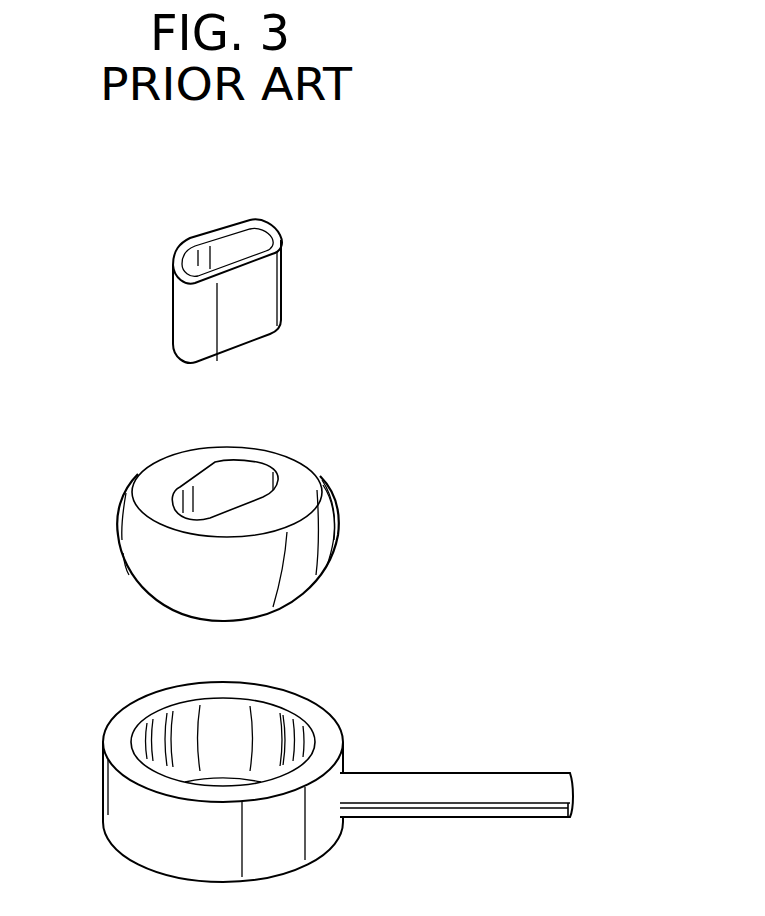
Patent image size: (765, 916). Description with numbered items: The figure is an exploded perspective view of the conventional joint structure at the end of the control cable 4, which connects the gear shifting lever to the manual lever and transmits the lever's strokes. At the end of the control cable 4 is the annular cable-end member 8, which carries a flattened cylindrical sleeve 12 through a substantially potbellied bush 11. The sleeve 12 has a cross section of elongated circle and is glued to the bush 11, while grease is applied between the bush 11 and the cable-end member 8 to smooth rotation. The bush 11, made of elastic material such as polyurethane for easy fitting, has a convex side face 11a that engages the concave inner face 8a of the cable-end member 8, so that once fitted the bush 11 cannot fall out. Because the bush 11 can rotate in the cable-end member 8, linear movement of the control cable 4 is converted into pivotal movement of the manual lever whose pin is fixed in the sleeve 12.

The flattened cylindrical sleeve 12 is at (298, 271).
The potbellied bush 11 is at (336, 476).
The side face of the bush 11a is at (327, 568).
The cable-end member 8 is at (270, 757).
The inner face of the cable-end member 8a is at (242, 723).
The control cable 4 is at (482, 765).